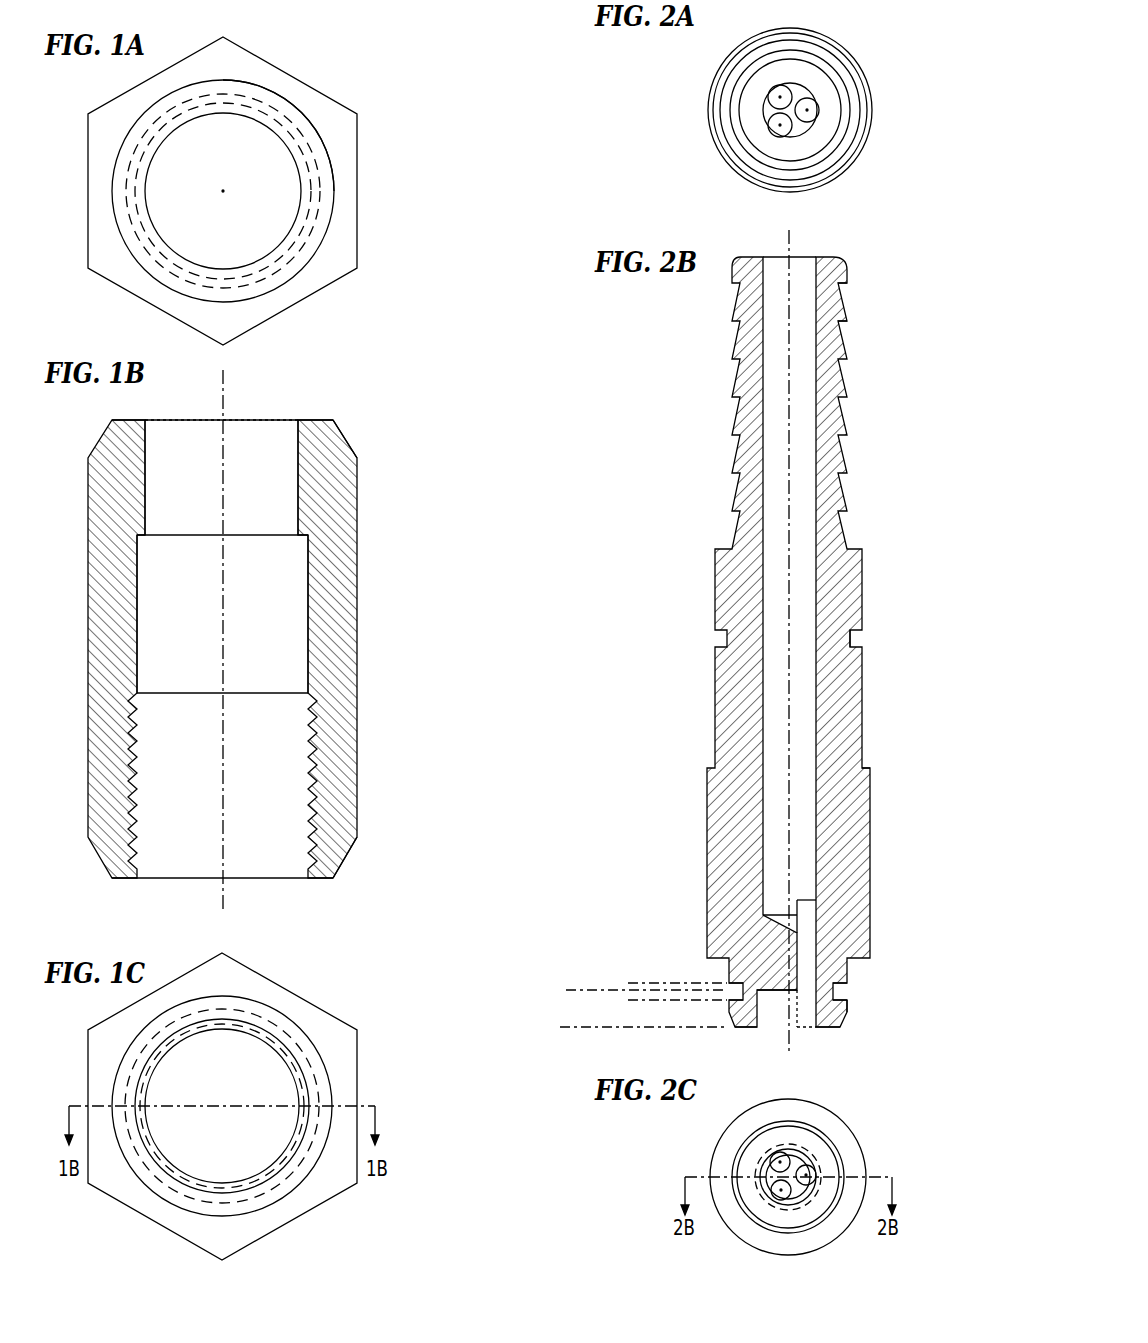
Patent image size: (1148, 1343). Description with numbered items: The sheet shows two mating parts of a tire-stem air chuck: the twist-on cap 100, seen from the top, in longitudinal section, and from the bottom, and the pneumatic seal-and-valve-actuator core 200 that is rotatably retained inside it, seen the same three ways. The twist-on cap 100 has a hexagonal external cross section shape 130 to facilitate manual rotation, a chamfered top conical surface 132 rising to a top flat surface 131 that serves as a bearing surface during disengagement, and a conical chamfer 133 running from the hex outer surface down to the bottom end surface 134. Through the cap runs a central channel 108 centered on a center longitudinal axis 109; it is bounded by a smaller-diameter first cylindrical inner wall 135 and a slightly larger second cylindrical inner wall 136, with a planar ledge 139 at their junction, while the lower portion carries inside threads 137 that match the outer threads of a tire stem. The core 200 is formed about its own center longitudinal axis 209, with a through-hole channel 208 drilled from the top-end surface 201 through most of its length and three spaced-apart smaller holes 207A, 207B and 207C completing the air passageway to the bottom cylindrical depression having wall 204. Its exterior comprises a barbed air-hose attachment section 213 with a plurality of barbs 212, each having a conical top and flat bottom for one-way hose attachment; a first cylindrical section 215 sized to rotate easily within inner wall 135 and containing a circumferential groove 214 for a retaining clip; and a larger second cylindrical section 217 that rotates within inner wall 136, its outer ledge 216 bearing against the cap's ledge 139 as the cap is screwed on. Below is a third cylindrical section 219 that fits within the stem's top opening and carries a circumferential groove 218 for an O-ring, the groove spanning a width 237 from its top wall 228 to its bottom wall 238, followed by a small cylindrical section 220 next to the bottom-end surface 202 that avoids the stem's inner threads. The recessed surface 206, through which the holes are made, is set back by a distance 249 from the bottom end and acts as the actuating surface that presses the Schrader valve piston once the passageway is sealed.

In FIG. 1A, the twist-on cap 100 is at (355, 74).
In FIG. 1B, the twist-on cap 100 is at (328, 372).
In FIG. 1C, the twist-on cap 100 is at (355, 1000).
In FIG. 1B, the central channel 108 is at (250, 422).
In FIG. 1A, the center longitudinal axis 109 is at (222, 192).
In FIG. 1B, the center longitudinal axis 109 is at (225, 380).
In FIG. 1A, the hexagonal external cross section shape 130 is at (358, 190).
In FIG. 1B, the hexagonal external cross section shape 130 is at (384, 463).
In FIG. 1C, the hexagonal external cross section shape 130 is at (277, 983).
In FIG. 1A, the top flat surface 131 is at (307, 118).
In FIG. 1B, the top flat surface 131 is at (333, 422).
In FIG. 1A, the chamfered top conical surface 132 is at (342, 148).
In FIG. 1B, the chamfered top conical surface 132 is at (350, 440).
In FIG. 1B, the conical chamfer 133 is at (347, 852).
In FIG. 1C, the conical chamfer 133 is at (335, 1042).
In FIG. 1B, the bottom end surface 134 is at (332, 878).
In FIG. 1C, the bottom end surface 134 is at (323, 1068).
In FIG. 1A, the first cylindrical inner wall 135 is at (143, 192).
In FIG. 1B, the first cylindrical inner wall 135 is at (145, 433).
In FIG. 1C, the first cylindrical inner wall 135 is at (150, 1087).
In FIG. 1A, the second cylindrical inner wall 136 is at (155, 245).
In FIG. 1B, the second cylindrical inner wall 136 is at (137, 633).
In FIG. 1C, the second cylindrical inner wall 136 is at (293, 1152).
In FIG. 1A, the inside threads 137 is at (178, 277).
In FIG. 1B, the inside threads 137 is at (126, 850).
In FIG. 1C, the inside threads 137 is at (150, 1168).
In FIG. 1B, the planar ledge 139 is at (306, 537).
In FIG. 1C, the planar ledge 139 is at (300, 1090).
In FIG. 2A, the pneumatic seal-and-valve-actuator core 200 is at (900, 55).
In FIG. 2B, the pneumatic seal-and-valve-actuator core 200 is at (738, 245).
In FIG. 2C, the pneumatic seal-and-valve-actuator core 200 is at (882, 1103).
In FIG. 2A, the top-end surface 201 is at (804, 79).
In FIG. 2B, the top-end surface 201 is at (840, 260).
In FIG. 2B, the bottom-end surface 202 is at (800, 1013).
In FIG. 2C, the bottom-end surface 202 is at (840, 1159).
In FIG. 2B, the cylindrical wall 204 is at (806, 1010).
In FIG. 2C, the cylindrical wall 204 is at (797, 1163).
In FIG. 2B, the actuating surface 206 is at (782, 993).
In FIG. 2C, the actuating surface 206 is at (797, 1160).
In FIG. 2A, the hole 207A is at (797, 102).
In FIG. 2B, the hole 207A is at (820, 895).
In FIG. 2C, the hole 207A is at (813, 1180).
In FIG. 2A, the hole 207B is at (768, 100).
In FIG. 2C, the hole 207B is at (787, 1193).
In FIG. 2A, the hole 207C is at (773, 115).
In FIG. 2C, the hole 207C is at (760, 1200).
In FIG. 2A, the through-hole channel 208 is at (803, 130).
In FIG. 2B, the through-hole channel 208 is at (812, 252).
In FIG. 2B, the center longitudinal axis 209 is at (789, 245).
In FIG. 2B, the barbs 212 is at (845, 303).
In FIG. 2A, the barbed air-hose attachment section 213 is at (843, 97).
In FIG. 2B, the barbed air-hose attachment section 213 is at (725, 255).
In FIG. 2B, the circumferential groove 214 is at (853, 637).
In FIG. 2A, the first cylindrical section 215 is at (858, 120).
In FIG. 2B, the first cylindrical section 215 is at (711, 548).
In FIG. 2B, the outer ledge 216 is at (863, 768).
In FIG. 2A, the second cylindrical section 217 is at (862, 148).
In FIG. 2B, the second cylindrical section 217 is at (691, 770).
In FIG. 2C, the second cylindrical section 217 is at (710, 1162).
In FIG. 2B, the circumferential groove 218 is at (744, 991).
In FIG. 2B, the third cylindrical section 219 is at (563, 1027).
In FIG. 2C, the third cylindrical section 219 is at (735, 1143).
In FIG. 2B, the small cylindrical section 220 is at (842, 1026).
In FIG. 2C, the small cylindrical section 220 is at (838, 1157).
In FIG. 2B, the top wall 228 is at (836, 991).
In FIG. 2B, the width 237 is at (657, 1060).
In FIG. 2B, the bottom wall 238 is at (837, 1003).
In FIG. 2B, the distance 249 is at (597, 1064).